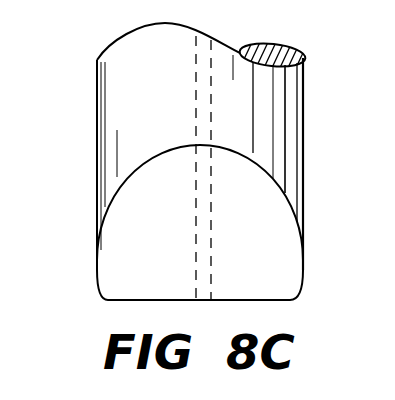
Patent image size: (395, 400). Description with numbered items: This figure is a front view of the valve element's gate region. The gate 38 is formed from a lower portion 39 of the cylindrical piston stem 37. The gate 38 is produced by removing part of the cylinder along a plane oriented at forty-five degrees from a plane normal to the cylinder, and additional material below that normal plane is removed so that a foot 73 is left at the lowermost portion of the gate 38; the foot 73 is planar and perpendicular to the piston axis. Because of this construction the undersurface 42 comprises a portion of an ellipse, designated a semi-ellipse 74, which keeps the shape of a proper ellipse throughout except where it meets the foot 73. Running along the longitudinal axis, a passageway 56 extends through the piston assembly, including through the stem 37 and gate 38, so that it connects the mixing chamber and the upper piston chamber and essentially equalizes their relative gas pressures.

The lower portion 39 is at (86, 188).
The piston stem 37 is at (164, 83).
The gate portion 38 is at (277, 237).
The passageway 56 is at (198, 106).
The semi-ellipse 74 is at (138, 168).
The undersurface 42 is at (160, 274).
The foot 73 is at (265, 301).